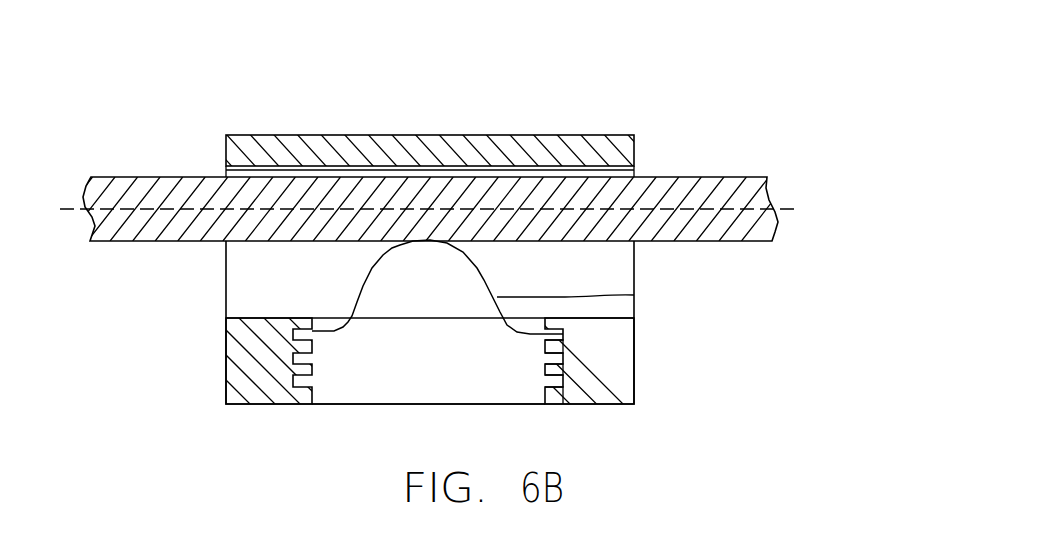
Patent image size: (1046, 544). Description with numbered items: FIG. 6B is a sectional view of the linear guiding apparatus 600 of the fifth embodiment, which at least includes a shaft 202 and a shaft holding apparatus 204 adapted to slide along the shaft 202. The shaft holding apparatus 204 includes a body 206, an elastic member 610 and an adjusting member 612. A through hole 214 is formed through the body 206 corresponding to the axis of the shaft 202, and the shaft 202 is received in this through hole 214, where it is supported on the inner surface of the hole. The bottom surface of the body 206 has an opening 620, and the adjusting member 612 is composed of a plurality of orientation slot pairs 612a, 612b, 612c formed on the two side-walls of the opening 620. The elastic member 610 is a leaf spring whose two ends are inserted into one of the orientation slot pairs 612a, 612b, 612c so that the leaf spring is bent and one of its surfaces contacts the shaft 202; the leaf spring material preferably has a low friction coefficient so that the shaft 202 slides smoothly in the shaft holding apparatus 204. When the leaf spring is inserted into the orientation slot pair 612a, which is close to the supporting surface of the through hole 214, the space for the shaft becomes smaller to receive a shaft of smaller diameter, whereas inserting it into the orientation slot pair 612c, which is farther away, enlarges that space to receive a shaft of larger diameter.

The linear guiding apparatus 600 is at (841, 32).
The shaft 202 is at (687, 177).
The shaft holding apparatus 204 is at (491, 342).
The body 206 is at (634, 263).
The through hole 214 is at (243, 290).
The elastic member 610 is at (634, 295).
The adjusting member 612 is at (471, 376).
The orientation slot pair 612a is at (560, 333).
The orientation slot pair 612b is at (560, 357).
The orientation slot pair 612c is at (560, 380).
The opening 620 is at (423, 389).